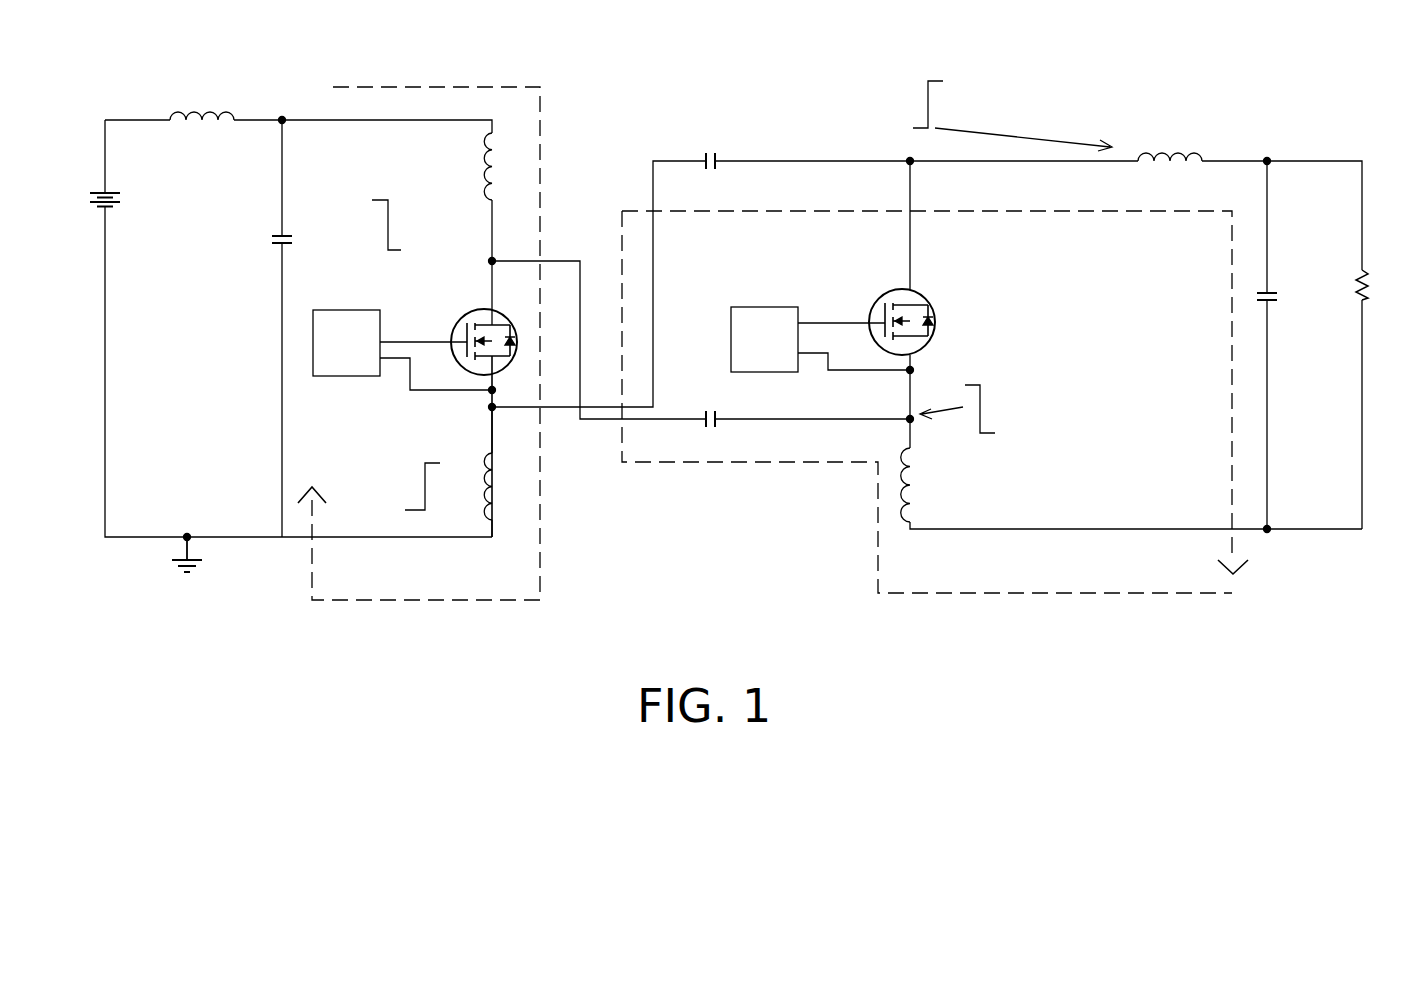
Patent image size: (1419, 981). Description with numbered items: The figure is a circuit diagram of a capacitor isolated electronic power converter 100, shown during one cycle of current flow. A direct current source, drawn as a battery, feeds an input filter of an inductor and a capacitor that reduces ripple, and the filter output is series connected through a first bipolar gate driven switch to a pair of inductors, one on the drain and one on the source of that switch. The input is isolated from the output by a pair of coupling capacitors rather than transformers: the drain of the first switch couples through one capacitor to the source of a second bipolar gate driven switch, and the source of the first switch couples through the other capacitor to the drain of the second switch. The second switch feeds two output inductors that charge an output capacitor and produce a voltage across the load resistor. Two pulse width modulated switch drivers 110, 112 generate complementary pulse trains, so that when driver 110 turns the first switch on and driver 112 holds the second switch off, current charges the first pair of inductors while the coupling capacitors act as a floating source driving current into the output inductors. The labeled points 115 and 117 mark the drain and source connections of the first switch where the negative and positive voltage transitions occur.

The capacitor isolated electronic power converter circuit 100 is at (746, 328).
The pulse width modulated switch driver 110 is at (360, 310).
The pulse width modulated switch driver 112 is at (750, 307).
The drain node of Q1 115 is at (477, 212).
The source node of Q1 / terminal 1 of L2B 117 is at (478, 448).